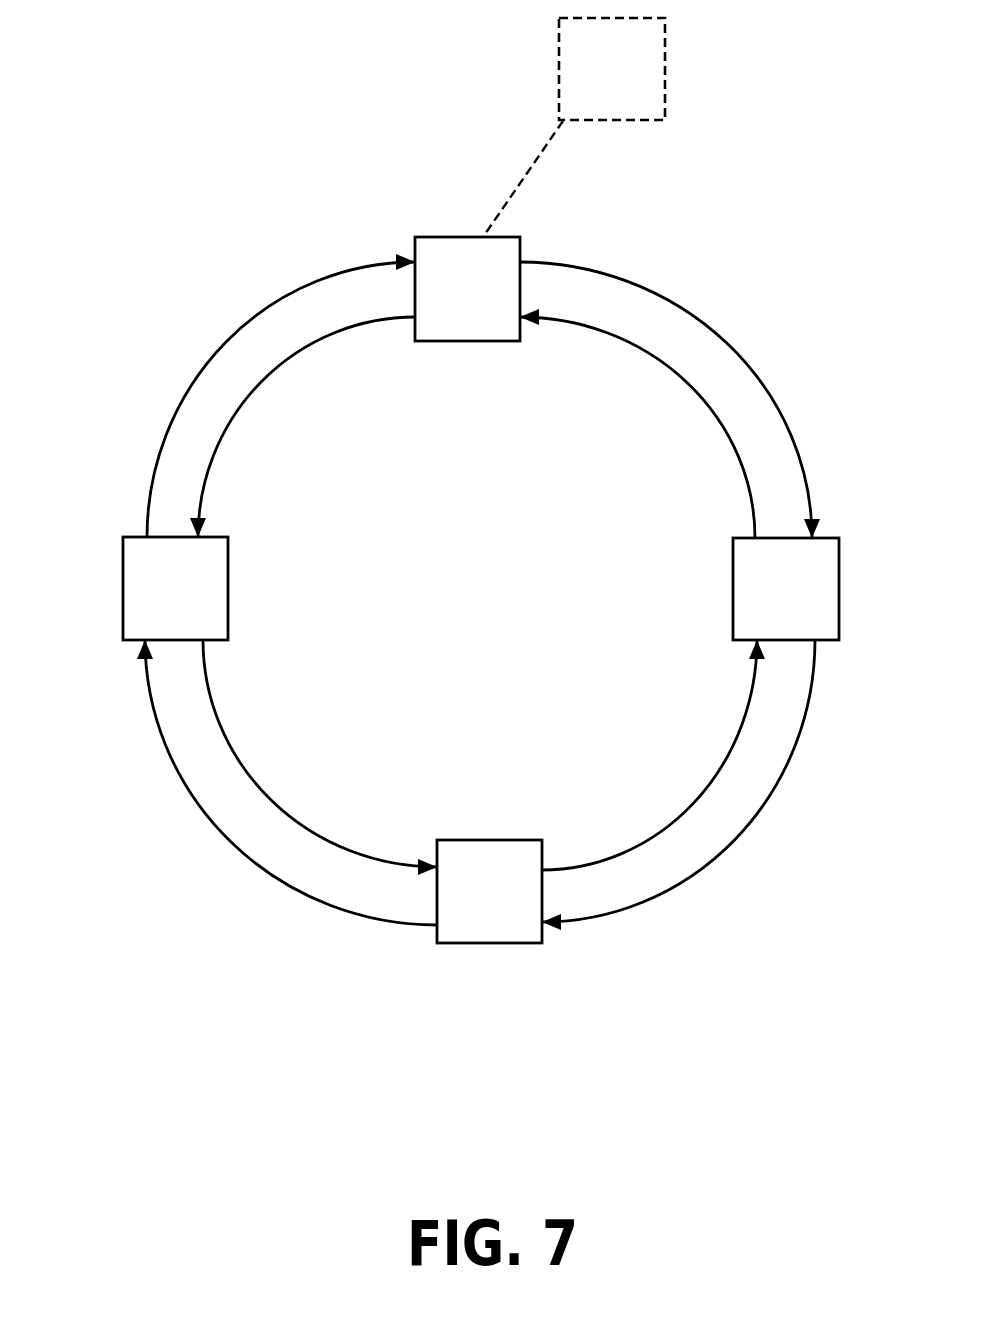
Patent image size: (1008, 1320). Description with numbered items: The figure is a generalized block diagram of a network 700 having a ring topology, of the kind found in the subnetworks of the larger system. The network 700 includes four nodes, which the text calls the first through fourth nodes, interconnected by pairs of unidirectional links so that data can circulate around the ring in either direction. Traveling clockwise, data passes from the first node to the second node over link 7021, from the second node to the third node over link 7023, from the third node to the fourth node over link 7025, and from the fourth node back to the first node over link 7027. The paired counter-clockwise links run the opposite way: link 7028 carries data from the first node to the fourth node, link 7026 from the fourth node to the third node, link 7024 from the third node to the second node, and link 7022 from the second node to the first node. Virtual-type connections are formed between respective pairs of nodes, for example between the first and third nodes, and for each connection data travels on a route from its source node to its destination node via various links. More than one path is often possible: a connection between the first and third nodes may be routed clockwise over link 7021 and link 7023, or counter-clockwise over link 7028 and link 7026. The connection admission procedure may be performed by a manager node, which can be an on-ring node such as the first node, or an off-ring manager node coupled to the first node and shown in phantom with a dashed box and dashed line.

The network 700 is at (69, 96).
The link 7021 is at (730, 341).
The link 7022 is at (676, 372).
The link 7023 is at (783, 780).
The link 7024 is at (661, 834).
The link 7025 is at (230, 852).
The link 7026 is at (251, 777).
The link 7027 is at (188, 383).
The link 7028 is at (215, 444).